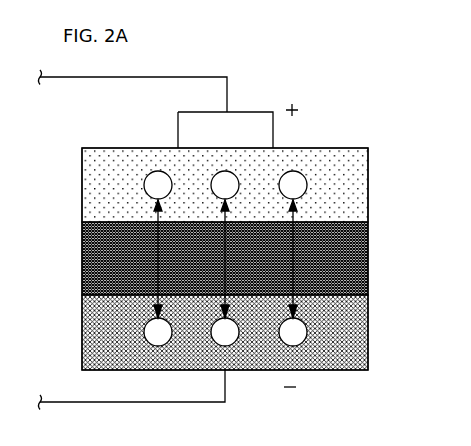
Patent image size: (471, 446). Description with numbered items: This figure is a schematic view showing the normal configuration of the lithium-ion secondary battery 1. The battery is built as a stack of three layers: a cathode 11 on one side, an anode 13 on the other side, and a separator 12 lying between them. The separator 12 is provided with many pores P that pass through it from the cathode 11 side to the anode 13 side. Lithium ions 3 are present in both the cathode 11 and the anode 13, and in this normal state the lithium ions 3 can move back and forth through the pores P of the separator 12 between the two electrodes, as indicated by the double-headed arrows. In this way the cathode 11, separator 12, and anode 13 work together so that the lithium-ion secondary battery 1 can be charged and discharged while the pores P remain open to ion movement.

The lithium-ion secondary battery 1 is at (38, 148).
The cathode 11 is at (82, 186).
The separator 12 is at (82, 261).
The anode 13 is at (82, 334).
The lithium ions 3 is at (156, 178).
The pores P is at (160, 240).